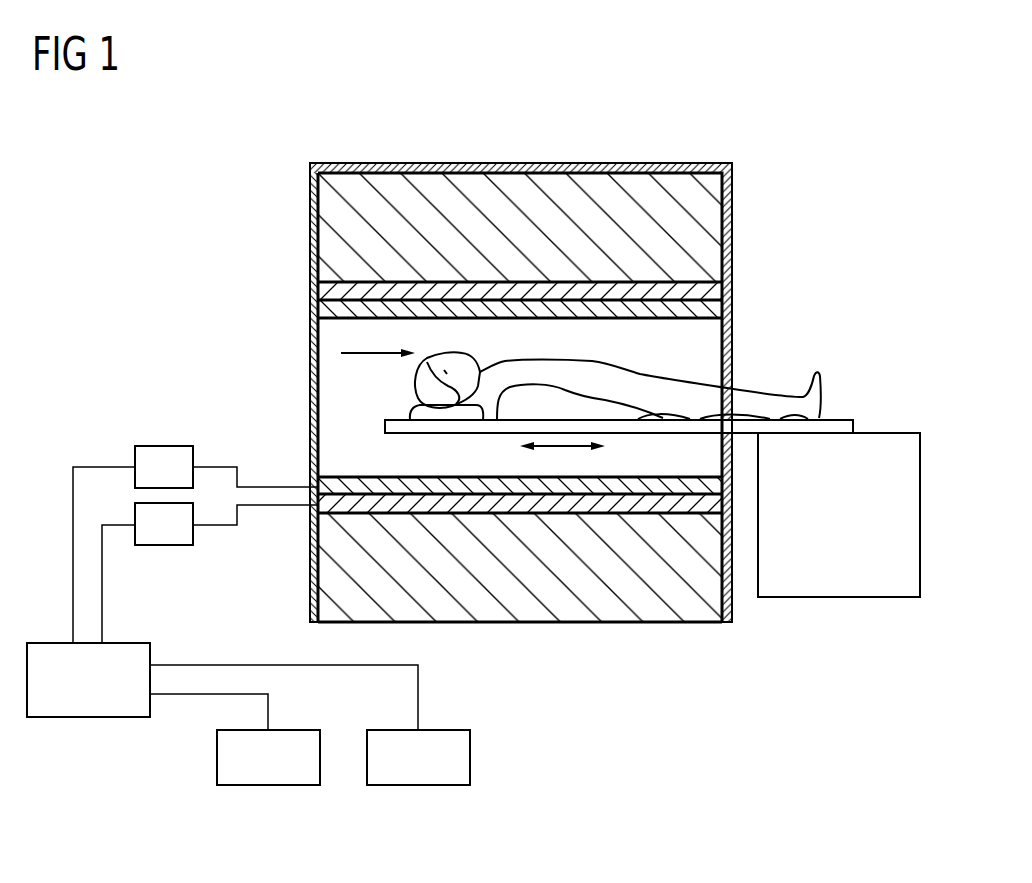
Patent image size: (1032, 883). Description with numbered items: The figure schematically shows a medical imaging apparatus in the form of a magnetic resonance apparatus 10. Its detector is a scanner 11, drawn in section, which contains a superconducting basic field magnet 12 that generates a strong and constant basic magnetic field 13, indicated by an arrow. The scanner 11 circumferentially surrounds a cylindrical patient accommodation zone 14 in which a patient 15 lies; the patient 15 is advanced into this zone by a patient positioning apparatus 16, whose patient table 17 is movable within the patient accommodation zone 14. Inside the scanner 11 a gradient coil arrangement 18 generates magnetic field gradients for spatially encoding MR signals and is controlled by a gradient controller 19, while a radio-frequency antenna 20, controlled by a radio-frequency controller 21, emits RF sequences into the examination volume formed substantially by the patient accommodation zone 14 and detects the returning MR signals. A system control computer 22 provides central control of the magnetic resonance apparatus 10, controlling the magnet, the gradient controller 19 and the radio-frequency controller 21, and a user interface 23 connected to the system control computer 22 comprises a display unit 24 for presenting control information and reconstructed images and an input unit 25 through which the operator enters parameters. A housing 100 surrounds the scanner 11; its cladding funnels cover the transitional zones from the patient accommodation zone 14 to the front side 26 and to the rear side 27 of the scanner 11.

The magnetic resonance apparatus 10 is at (795, 184).
The housing 100 is at (590, 152).
The scanner 11 is at (451, 152).
The superconducting basic field magnet 12 is at (712, 222).
The basic magnetic field 13 is at (353, 355).
The patient accommodation zone 14 is at (710, 347).
The patient 15 is at (775, 408).
The patient positioning apparatus 16 is at (874, 643).
The patient table 17 is at (838, 418).
The gradient coil arrangement 18 is at (720, 292).
The gradient controller 19 is at (160, 548).
The radio-frequency antenna 20 is at (358, 487).
The radio-frequency controller 21 is at (165, 445).
The system control computer 22 is at (80, 720).
The user interface 23 is at (544, 712).
The display unit 24 is at (267, 790).
The input unit 25 is at (418, 790).
The front side 26 is at (722, 195).
The rear side 27 is at (313, 232).